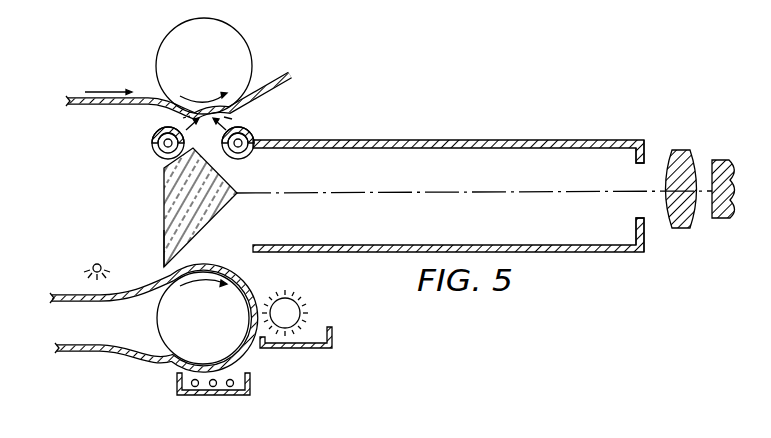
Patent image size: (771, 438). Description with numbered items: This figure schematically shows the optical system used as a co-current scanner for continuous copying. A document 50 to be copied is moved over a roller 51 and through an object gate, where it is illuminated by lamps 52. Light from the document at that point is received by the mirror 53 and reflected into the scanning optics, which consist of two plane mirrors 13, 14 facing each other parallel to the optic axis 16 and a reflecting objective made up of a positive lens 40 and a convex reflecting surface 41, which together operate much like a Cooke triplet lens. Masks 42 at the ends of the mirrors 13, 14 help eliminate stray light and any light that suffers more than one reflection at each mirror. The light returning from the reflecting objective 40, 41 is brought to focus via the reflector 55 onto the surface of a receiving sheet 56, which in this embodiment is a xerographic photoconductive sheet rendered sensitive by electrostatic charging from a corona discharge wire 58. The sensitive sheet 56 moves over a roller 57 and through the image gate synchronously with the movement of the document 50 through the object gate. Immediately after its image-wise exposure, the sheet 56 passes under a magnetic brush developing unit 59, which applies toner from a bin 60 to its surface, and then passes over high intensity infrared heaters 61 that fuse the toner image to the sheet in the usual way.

The plane mirror 13 is at (403, 149).
The plane mirror 14 is at (500, 243).
The optic axis 16 is at (474, 191).
The positive lens 40 is at (689, 153).
The convex reflecting surface 41 is at (709, 216).
The masks 42 is at (647, 150).
The document 50 is at (276, 81).
The roller 51 is at (233, 45).
The lamps 52 is at (158, 136).
The mirror 53 is at (221, 182).
The reflector 55 is at (209, 216).
The receiving sheet 56 is at (108, 305).
The roller 57 is at (158, 329).
The corona discharge wire 58 is at (100, 262).
The magnetic brush developing unit 59 is at (290, 301).
The bin 60 is at (310, 332).
The high intensity infrared heaters 61 is at (252, 377).